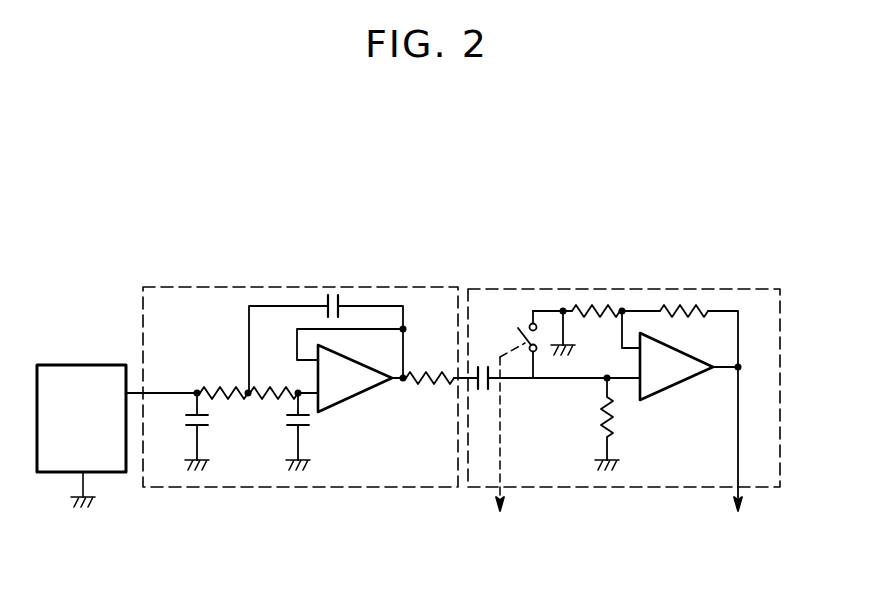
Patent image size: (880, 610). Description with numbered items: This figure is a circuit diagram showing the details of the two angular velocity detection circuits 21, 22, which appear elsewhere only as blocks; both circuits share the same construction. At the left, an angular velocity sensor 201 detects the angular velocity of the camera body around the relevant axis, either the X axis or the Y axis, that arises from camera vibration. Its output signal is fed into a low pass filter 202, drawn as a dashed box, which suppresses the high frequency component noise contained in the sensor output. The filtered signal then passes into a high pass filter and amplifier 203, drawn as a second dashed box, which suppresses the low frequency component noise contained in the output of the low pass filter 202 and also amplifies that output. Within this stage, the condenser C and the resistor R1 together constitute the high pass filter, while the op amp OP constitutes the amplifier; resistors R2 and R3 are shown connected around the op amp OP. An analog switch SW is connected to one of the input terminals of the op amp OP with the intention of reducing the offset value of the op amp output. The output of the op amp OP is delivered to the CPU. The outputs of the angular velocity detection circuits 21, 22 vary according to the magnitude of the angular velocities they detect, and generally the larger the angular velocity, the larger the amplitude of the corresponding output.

The angular velocity detection circuit 21 is at (430, 266).
The angular velocity detection circuit 22 is at (489, 369).
The angular velocity sensor 201 is at (90, 365).
The low pass filter 202 is at (412, 483).
The high pass filter and amplifier 203 is at (660, 398).
The condenser C is at (483, 392).
The analog switch SW is at (525, 343).
The resistor R1 is at (600, 418).
The resistor R2 is at (578, 311).
The resistor R3 is at (674, 311).
The op amp OP is at (675, 378).